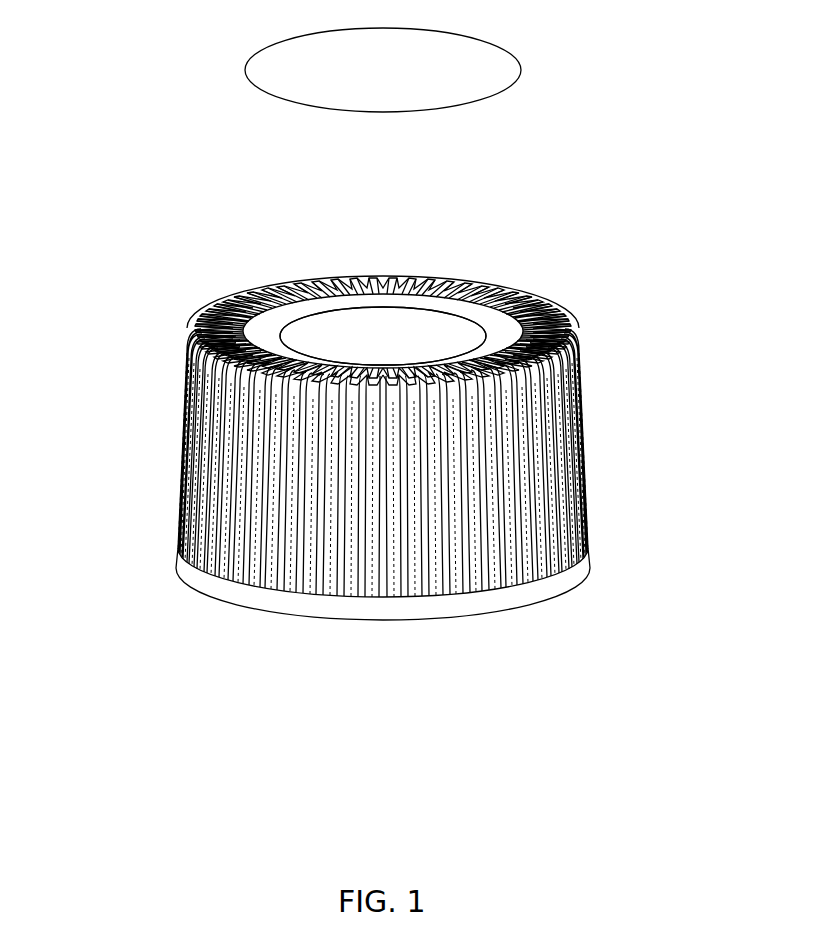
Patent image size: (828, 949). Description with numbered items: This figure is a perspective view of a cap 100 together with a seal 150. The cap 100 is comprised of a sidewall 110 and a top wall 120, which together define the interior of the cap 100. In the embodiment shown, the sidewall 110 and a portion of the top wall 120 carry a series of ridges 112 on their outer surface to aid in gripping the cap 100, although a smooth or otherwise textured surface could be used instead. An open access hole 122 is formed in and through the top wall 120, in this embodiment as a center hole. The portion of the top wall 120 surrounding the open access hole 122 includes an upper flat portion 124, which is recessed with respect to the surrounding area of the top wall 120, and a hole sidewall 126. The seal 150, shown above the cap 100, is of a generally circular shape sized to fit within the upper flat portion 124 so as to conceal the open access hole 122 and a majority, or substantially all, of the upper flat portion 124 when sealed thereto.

The cap 100 is at (165, 240).
The sidewall 110 is at (185, 445).
The ridges 112 is at (337, 274).
The top wall 120 is at (558, 315).
The open access hole 122 is at (393, 365).
The upper flat portion 124 is at (263, 335).
The hole sidewall 126 is at (390, 327).
The seal 150 is at (283, 62).